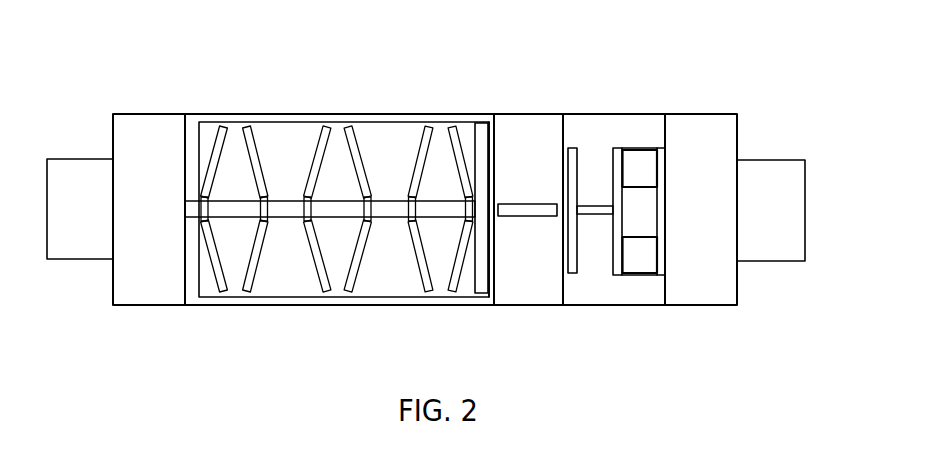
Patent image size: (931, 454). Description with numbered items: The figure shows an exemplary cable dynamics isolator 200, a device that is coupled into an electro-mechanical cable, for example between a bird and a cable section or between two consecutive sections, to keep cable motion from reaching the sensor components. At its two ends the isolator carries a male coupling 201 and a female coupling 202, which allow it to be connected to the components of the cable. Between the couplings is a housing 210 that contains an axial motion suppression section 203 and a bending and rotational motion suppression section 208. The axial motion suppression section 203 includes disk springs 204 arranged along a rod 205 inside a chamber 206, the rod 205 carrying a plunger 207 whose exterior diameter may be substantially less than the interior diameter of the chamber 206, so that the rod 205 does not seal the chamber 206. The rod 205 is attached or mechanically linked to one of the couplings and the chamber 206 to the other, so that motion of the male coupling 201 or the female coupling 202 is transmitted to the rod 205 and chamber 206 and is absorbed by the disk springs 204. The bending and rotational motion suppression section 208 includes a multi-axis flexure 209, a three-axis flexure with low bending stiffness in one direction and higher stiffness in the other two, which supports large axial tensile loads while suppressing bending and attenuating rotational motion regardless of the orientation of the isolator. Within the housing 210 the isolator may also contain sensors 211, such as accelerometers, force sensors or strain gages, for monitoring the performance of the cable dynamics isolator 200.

The cable dynamics isolator 200 is at (53, 24).
The male coupling 201 is at (47, 167).
The female coupling 202 is at (806, 168).
The axial motion suppression section 203 is at (233, 306).
The disk springs 204 is at (448, 130).
The rod 205 is at (395, 218).
The chamber 206 is at (443, 297).
The plunger 207 is at (487, 295).
The bending and rotational motion suppression section 208 is at (613, 306).
The multi-axis flexure 209 is at (615, 147).
The housing 210 is at (473, 114).
The sensors 211 is at (527, 218).